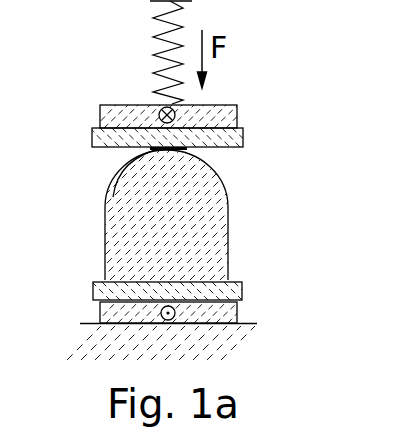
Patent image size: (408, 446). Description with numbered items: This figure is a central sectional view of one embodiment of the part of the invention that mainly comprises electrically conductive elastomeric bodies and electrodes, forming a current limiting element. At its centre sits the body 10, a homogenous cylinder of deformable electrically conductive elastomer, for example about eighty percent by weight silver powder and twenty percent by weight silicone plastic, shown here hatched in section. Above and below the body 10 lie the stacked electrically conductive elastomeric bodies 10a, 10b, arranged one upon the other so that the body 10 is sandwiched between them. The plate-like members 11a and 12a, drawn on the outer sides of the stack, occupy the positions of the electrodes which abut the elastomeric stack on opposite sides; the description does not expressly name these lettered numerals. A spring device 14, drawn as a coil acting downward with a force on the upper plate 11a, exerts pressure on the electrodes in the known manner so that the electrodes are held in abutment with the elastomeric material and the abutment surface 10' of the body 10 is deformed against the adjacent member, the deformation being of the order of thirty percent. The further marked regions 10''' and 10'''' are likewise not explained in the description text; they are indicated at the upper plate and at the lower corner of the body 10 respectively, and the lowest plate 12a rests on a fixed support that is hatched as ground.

The spring device 14 is at (154, 18).
The upper contact plate 11a is at (223, 115).
The upper plate region 10''' is at (71, 118).
The electrically conductive elastomeric body 10a is at (240, 133).
The body 10 is at (175, 215).
The abutment surface 10' is at (113, 178).
The lower corner region of body 10'''' is at (62, 279).
The electrically conductive elastomeric body 10b is at (238, 282).
The lower contact plate 12a is at (228, 311).